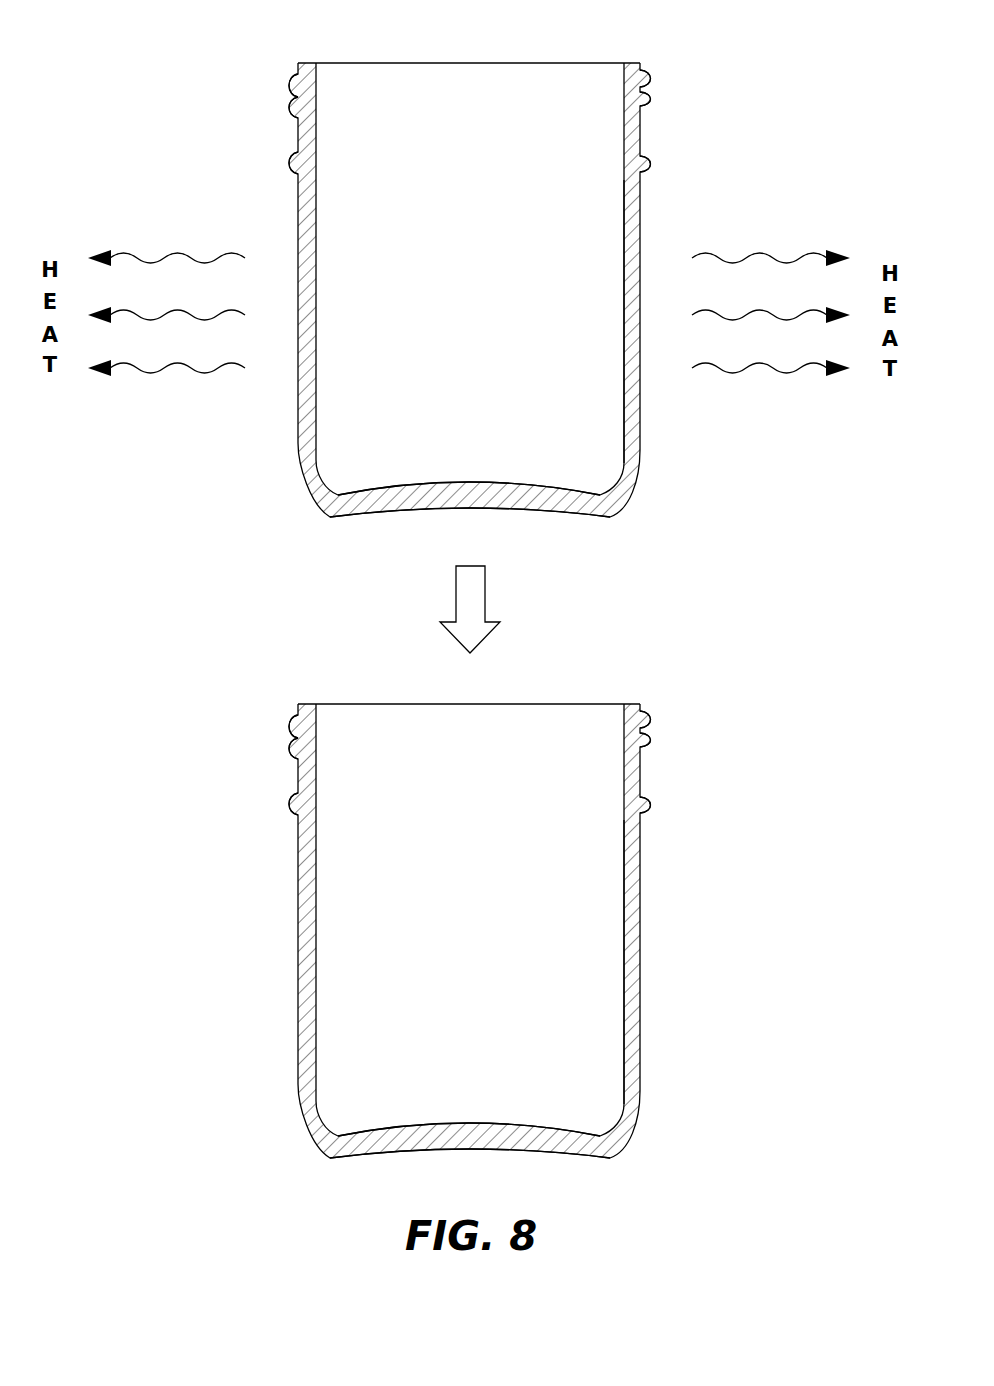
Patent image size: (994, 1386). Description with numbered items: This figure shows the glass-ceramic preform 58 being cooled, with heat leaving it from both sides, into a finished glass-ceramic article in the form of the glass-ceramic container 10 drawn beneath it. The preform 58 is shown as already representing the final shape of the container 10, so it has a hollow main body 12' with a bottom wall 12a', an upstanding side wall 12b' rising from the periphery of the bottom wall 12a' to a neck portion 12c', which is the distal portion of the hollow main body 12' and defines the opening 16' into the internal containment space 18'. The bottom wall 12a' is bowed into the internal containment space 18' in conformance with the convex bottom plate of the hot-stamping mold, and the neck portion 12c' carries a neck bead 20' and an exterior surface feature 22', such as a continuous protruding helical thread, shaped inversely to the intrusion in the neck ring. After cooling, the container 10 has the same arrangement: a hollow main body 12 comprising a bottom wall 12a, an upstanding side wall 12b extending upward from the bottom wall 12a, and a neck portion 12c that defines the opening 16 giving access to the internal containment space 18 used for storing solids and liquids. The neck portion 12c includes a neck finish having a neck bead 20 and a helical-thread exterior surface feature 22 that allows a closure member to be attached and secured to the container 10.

The glass-ceramic preform 58 is at (282, 440).
The hollow main body 12' is at (470, 290).
The opening 16' is at (453, 31).
The neck portion 12c' is at (350, 124).
The exterior surface feature 22' is at (687, 88).
The neck bead 20' is at (684, 169).
The upstanding side wall 12b' is at (573, 321).
The internal containment space 18' is at (478, 404).
The neck bead 20 is at (639, 599).
The bottom wall 12a' is at (470, 516).
The glass-ceramic container 10 is at (272, 1002).
The hollow main body 12 is at (470, 931).
The opening 16 is at (462, 676).
The neck portion 12c is at (342, 765).
The exterior surface feature 22 is at (684, 729).
The upstanding side wall 12b is at (586, 962).
The internal containment space 18 is at (482, 1044).
The bottom wall 12a is at (470, 1159).